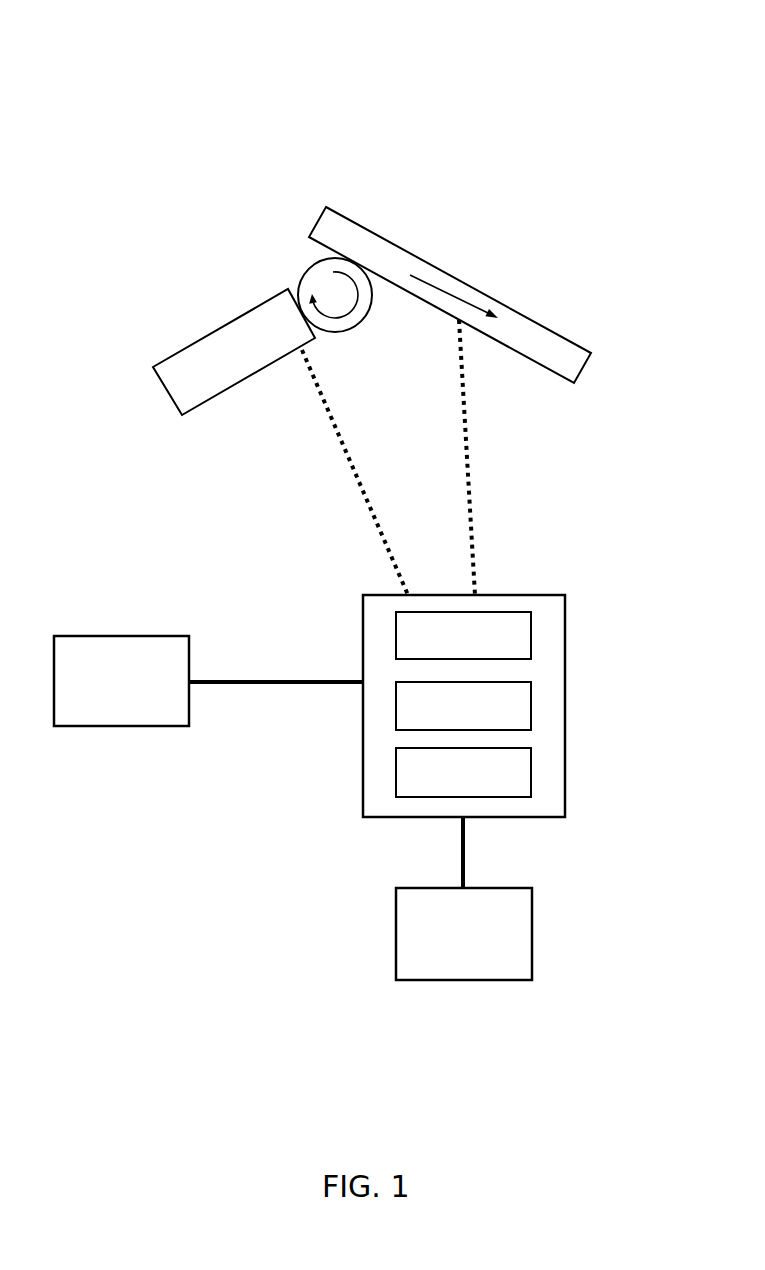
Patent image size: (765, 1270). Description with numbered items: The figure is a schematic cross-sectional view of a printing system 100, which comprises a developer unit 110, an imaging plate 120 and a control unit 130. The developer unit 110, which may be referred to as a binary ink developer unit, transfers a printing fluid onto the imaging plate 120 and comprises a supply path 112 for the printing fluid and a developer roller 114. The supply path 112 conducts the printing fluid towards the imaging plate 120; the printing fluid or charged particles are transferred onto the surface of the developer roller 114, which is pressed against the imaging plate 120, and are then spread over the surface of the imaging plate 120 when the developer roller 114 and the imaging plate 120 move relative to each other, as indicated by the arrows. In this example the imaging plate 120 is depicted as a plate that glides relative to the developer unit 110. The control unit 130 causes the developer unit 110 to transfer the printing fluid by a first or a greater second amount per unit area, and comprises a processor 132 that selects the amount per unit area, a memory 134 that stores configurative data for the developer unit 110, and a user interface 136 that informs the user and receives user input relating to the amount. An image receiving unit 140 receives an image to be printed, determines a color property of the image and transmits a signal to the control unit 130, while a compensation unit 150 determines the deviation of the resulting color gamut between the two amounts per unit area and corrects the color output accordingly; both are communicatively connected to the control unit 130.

The printing system 100 is at (180, 172).
The developer unit 110 is at (288, 403).
The supply path 112 is at (218, 328).
The developer roller 114 is at (353, 333).
The imaging plate 120 is at (395, 238).
The control unit 130 is at (362, 770).
The processor 132 is at (532, 637).
The memory 134 is at (532, 708).
The user interface 136 is at (532, 777).
The image receiving unit 140 is at (128, 727).
The compensation unit 150 is at (532, 942).